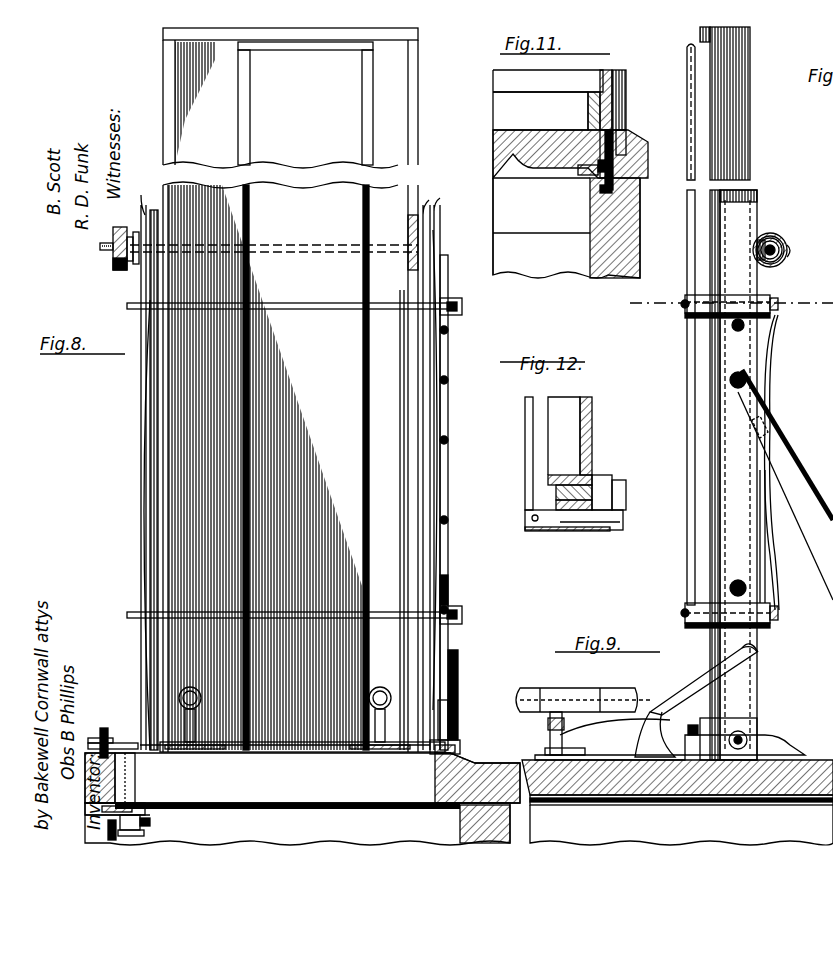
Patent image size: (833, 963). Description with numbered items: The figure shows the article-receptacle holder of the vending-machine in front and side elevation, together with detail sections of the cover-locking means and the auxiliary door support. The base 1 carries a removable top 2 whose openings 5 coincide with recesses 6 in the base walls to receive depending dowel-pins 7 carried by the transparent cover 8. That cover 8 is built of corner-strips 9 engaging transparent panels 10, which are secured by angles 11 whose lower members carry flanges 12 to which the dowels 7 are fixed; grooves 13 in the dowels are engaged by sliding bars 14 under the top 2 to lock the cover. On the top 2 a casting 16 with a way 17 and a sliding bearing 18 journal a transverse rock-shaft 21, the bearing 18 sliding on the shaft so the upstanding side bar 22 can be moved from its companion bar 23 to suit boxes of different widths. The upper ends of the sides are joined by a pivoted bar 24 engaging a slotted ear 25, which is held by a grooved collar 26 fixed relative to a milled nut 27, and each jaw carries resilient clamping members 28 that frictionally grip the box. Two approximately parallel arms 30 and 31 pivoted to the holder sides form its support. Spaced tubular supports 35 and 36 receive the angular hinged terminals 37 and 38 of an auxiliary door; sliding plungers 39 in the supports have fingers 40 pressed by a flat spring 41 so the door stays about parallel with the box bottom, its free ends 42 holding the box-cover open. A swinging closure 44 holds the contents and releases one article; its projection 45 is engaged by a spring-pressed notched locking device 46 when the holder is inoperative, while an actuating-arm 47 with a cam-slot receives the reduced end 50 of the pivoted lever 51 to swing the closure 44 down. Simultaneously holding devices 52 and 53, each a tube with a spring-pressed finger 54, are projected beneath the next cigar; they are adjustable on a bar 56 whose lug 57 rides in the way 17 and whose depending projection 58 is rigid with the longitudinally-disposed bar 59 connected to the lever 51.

In FIG. 8, the base 1 is at (460, 826).
In FIG. 11, the base 1 is at (540, 250).
In FIG. 9, the base 1 is at (681, 825).
In FIG. 8, the removable top 2 is at (475, 757).
In FIG. 11, the removable top 2 is at (510, 148).
In FIG. 9, the removable top 2 is at (648, 775).
In FIG. 11, the openings 5 is at (620, 158).
In FIG. 11, the recesses 6 is at (600, 200).
In FIG. 11, the dowel-pins 7 is at (580, 175).
In FIG. 11, the transparent cover 8 is at (520, 97).
In FIG. 11, the corner-strips 9 is at (622, 75).
In FIG. 11, the transparent panels 10 is at (598, 78).
In FIG. 11, the angles 11 is at (540, 111).
In FIG. 11, the flanges 12 is at (615, 128).
In FIG. 11, the grooves 13 is at (600, 180).
In FIG. 8, the sliding bars 14 is at (445, 808).
In FIG. 11, the sliding bars 14 is at (590, 180).
In FIG. 9, the sliding bars 14 is at (745, 795).
In FIG. 9, the casting 16 is at (782, 760).
In FIG. 8, the way 17 is at (458, 745).
In FIG. 9, the way 17 is at (612, 758).
In FIG. 8, the sliding bearing 18 is at (90, 745).
In FIG. 8, the rock-shaft 21 is at (108, 735).
In FIG. 8, the side bar 22 is at (445, 362).
In FIG. 12, the side bar 22 is at (592, 470).
In FIG. 9, the side bar 22 is at (735, 470).
In FIG. 8, the companion bar 23 is at (135, 345).
In FIG. 8, the pivoted bar 24 is at (100, 247).
In FIG. 9, the pivoted bar 24 is at (775, 232).
In FIG. 9, the slotted ear 25 is at (782, 262).
In FIG. 8, the grooved collar 26 is at (135, 262).
In FIG. 9, the grooved collar 26 is at (786, 246).
In FIG. 8, the milled nut 27 is at (118, 262).
In FIG. 9, the milled nut 27 is at (784, 240).
In FIG. 8, the resilient clamping members 28 is at (150, 575).
In FIG. 9, the resilient clamping members 28 is at (752, 190).
In FIG. 8, the arm 30 is at (445, 500).
In FIG. 8, the arm 31 is at (132, 505).
In FIG. 8, the tubular support 35 is at (462, 620).
In FIG. 9, the tubular support 35 is at (772, 626).
In FIG. 8, the tubular support 36 is at (455, 298).
In FIG. 9, the tubular support 36 is at (695, 320).
In FIG. 8, the hinged terminal 37 is at (450, 606).
In FIG. 8, the hinged terminal 38 is at (440, 313).
In FIG. 12, the hinged terminal 38 is at (545, 512).
In FIG. 12, the plungers 39 is at (590, 525).
In FIG. 9, the plungers 39 is at (780, 318).
In FIG. 12, the fingers 40 is at (610, 480).
In FIG. 9, the fingers 40 is at (808, 500).
In FIG. 12, the flat spring 41 is at (625, 490).
In FIG. 9, the flat spring 41 is at (775, 370).
In FIG. 8, the free ends 42 is at (128, 308).
In FIG. 8, the swinging closure 44 is at (275, 755).
In FIG. 9, the swinging closure 44 is at (700, 735).
In FIG. 8, the projection 45 is at (462, 735).
In FIG. 9, the projection 45 is at (695, 722).
In FIG. 8, the notched locking device 46 is at (458, 690).
In FIG. 9, the notched locking device 46 is at (672, 688).
In FIG. 8, the actuating-arm 47 is at (140, 790).
In FIG. 8, the reduced end 50 is at (150, 825).
In FIG. 8, the pivoted lever 51 is at (95, 825).
In FIG. 8, the holding device 52 is at (372, 694).
In FIG. 9, the holding device 52 is at (612, 690).
In FIG. 8, the holding device 53 is at (195, 690).
In FIG. 9, the spring-pressed finger 54 is at (640, 708).
In FIG. 8, the bar 56 is at (335, 752).
In FIG. 9, the bar 56 is at (575, 742).
In FIG. 9, the lug 57 is at (548, 752).
In FIG. 8, the depending projection 58 is at (100, 775).
In FIG. 8, the longitudinally-disposed bar 59 is at (110, 800).